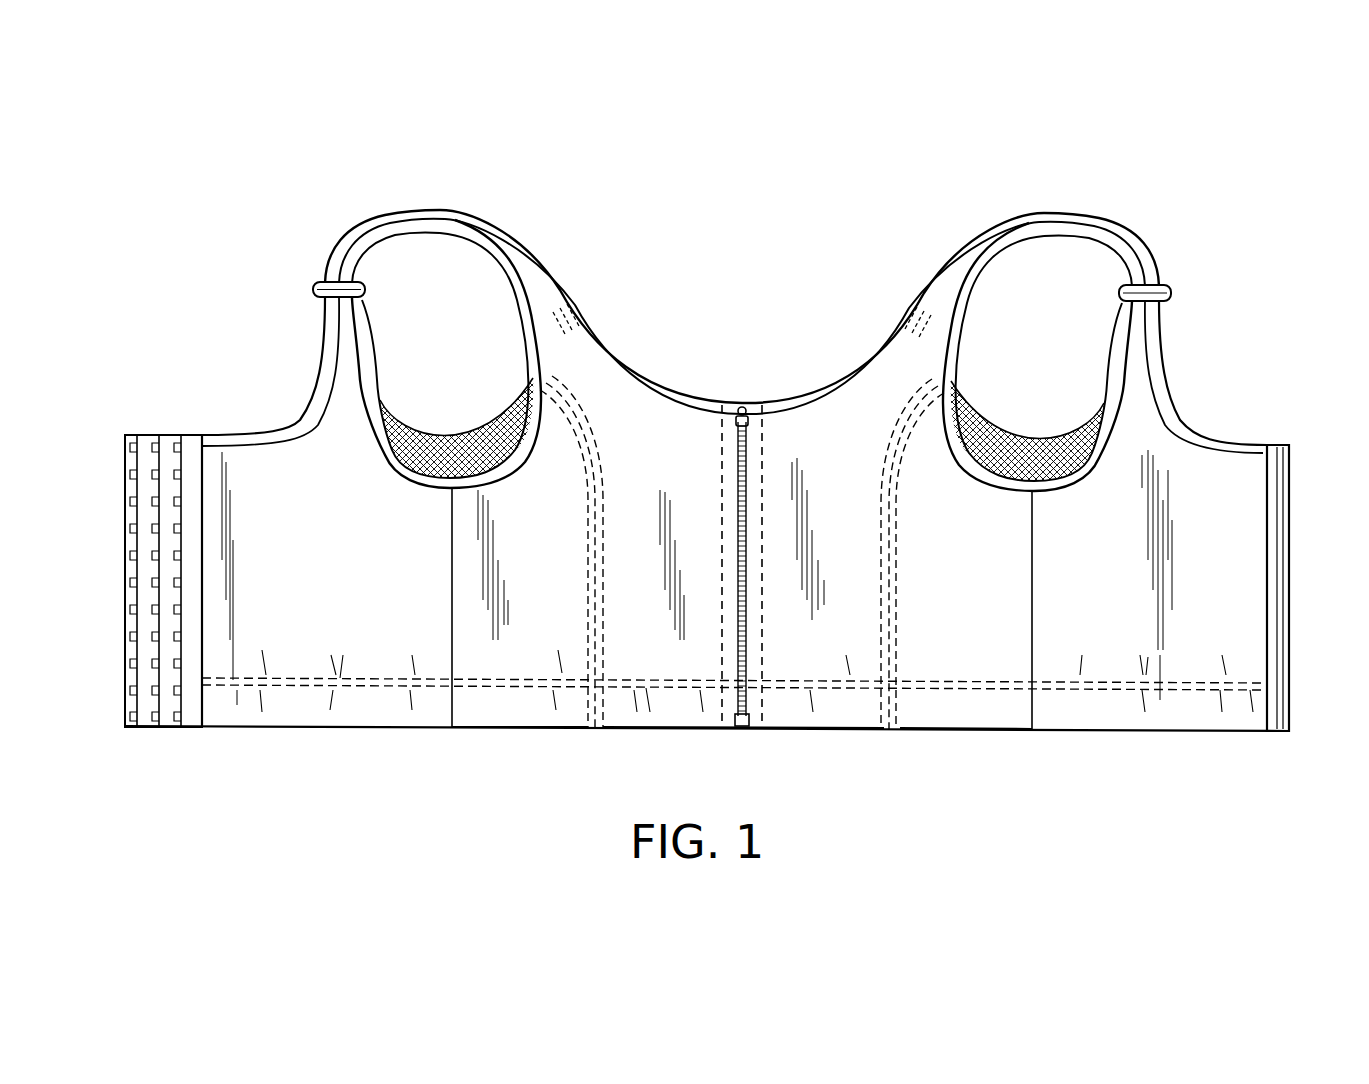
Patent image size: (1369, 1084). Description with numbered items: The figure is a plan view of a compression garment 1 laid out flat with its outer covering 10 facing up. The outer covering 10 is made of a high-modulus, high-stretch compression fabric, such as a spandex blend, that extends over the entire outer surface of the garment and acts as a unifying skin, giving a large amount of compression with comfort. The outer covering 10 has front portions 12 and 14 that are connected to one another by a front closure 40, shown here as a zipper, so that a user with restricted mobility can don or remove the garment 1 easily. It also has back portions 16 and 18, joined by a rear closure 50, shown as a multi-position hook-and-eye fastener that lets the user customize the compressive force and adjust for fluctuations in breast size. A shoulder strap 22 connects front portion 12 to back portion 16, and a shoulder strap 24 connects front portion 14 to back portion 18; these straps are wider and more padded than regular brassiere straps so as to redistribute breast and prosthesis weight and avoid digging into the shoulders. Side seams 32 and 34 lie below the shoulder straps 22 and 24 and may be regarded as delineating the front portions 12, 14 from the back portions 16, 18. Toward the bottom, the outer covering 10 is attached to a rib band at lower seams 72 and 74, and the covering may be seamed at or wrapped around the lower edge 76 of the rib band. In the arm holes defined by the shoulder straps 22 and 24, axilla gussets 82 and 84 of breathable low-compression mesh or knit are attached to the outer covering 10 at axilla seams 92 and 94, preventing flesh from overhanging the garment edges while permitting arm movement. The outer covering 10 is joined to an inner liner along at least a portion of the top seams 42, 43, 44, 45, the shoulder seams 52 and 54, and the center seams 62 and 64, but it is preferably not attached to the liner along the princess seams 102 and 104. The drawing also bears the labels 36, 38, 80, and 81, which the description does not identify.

The compression garment 1 is at (228, 171).
The outer covering 10 is at (1062, 508).
The front portion 12 is at (633, 532).
The front portion 14 is at (840, 512).
The back portion 16 is at (330, 503).
The back portion 18 is at (1218, 608).
The shoulder strap 22 is at (545, 304).
The shoulder strap 24 is at (950, 304).
The side seam 32 is at (448, 648).
The side seam 34 is at (1038, 650).
The left wing inner edge 36 is at (203, 543).
The right wing end panel 38 is at (1270, 528).
The front closure 40 is at (743, 400).
The top seam 42 is at (628, 374).
The top seam 43 is at (279, 430).
The top seam 44 is at (870, 376).
The top seam 45 is at (1242, 443).
The rear closure 50 is at (128, 538).
The shoulder seam 52 is at (572, 320).
The shoulder seam 54 is at (918, 326).
The center seam 62 is at (721, 465).
The center seam 64 is at (762, 465).
The lower seam 72 is at (538, 683).
The lower seam 74 is at (942, 686).
The lower edge 76 is at (673, 729).
The left strap loop 80 is at (434, 234).
The right strap loop 81 is at (1057, 236).
The axilla gusset 82 is at (462, 452).
The axilla gusset 84 is at (1032, 452).
The axilla seam 92 is at (498, 466).
The axilla seam 94 is at (988, 467).
The princess seam 102 is at (590, 548).
The princess seam 104 is at (897, 570).